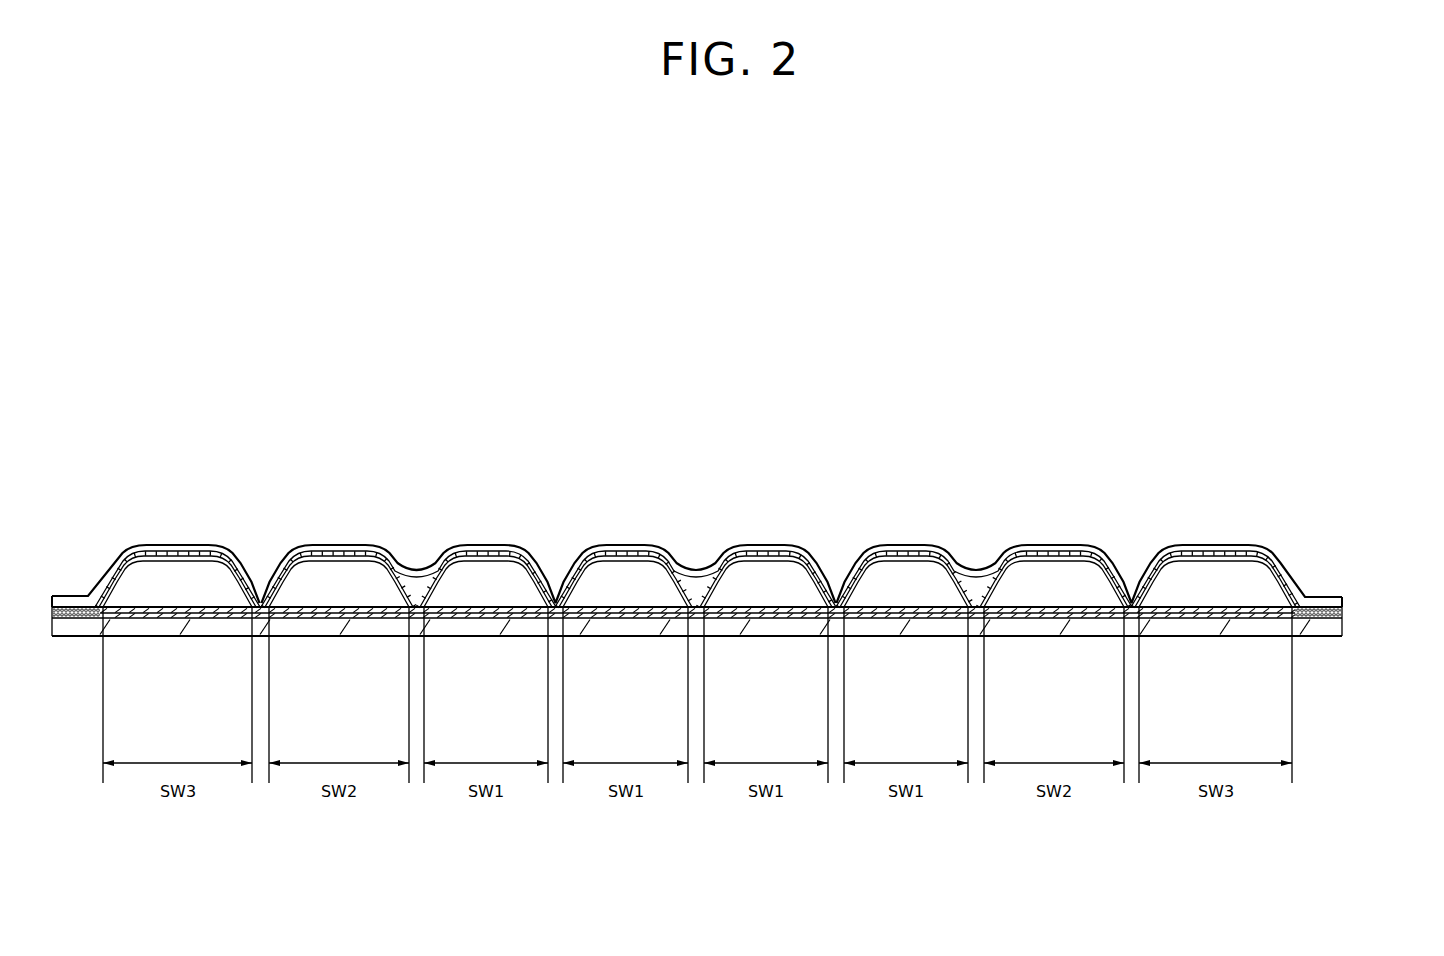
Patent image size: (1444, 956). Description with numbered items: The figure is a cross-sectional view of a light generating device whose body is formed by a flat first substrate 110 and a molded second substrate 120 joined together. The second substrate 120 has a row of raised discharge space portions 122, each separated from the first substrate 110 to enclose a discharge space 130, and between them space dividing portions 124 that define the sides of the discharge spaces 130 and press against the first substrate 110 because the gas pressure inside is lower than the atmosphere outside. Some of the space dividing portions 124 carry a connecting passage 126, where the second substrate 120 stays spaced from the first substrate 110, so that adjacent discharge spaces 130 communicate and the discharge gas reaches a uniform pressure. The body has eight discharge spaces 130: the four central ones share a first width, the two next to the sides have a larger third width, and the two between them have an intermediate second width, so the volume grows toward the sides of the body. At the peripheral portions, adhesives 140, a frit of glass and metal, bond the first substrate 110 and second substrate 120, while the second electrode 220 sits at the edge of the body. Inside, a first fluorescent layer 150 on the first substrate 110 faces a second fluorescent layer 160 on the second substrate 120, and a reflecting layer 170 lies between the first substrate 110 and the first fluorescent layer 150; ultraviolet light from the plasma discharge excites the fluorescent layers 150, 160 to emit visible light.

The first substrate 110 is at (1343, 628).
The second substrate 120 is at (1343, 598).
The discharge space portions 122 is at (1203, 554).
The space dividing portions 124 is at (1134, 600).
The connecting passage 126 is at (973, 569).
The discharge spaces 130 is at (929, 579).
The adhesives 140 is at (1343, 612).
The first fluorescent layer 150 is at (1169, 620).
The second fluorescent layer 160 is at (1052, 565).
The reflecting layer 170 is at (1231, 618).
The second electrode 220 is at (1322, 598).